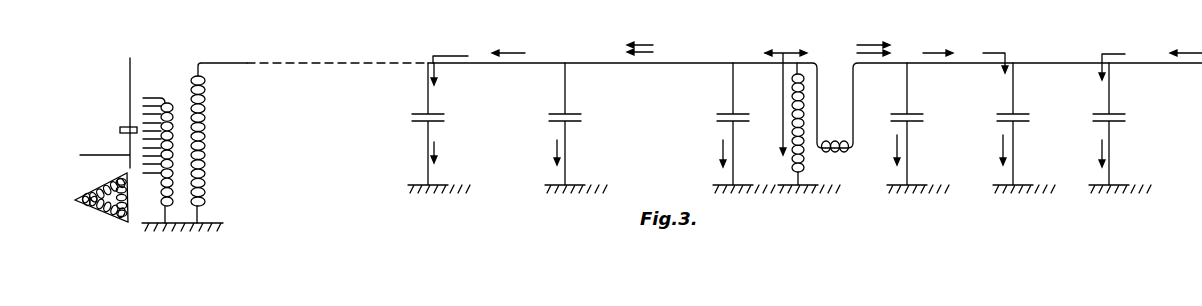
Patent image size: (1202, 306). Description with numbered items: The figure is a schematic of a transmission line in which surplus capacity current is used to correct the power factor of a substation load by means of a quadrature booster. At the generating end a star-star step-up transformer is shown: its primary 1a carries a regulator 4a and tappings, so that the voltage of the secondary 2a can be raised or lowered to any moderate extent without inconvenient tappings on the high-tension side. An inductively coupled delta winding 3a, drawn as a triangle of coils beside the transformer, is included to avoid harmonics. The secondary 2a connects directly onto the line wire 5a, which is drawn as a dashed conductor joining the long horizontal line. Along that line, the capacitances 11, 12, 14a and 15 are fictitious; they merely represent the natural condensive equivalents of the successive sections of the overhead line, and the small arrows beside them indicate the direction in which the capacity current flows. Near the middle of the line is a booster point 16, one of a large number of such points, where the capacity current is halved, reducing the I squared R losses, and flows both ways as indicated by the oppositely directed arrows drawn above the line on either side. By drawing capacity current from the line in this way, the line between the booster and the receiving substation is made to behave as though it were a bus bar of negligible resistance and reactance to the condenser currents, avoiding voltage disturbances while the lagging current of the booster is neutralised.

The primary 1a is at (161, 199).
The secondary 2a is at (206, 165).
The inductively coupled delta winding 3a is at (88, 193).
The regulator 4a is at (120, 127).
The line wire 5a is at (252, 62).
The capacitance 11 is at (418, 125).
The capacitance 12 is at (570, 122).
The capacitance 14a is at (905, 124).
The capacitance 15 is at (1015, 124).
The booster point 16 is at (804, 164).